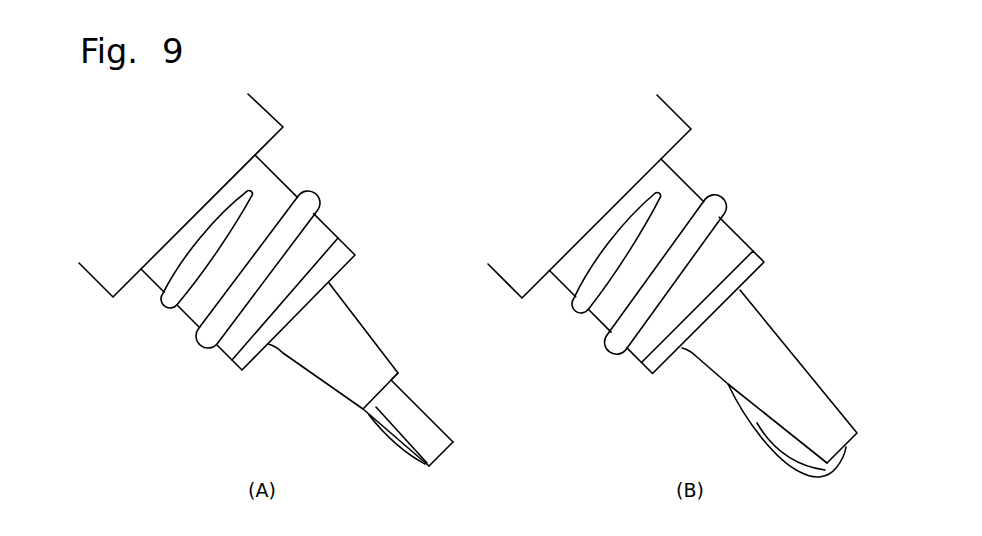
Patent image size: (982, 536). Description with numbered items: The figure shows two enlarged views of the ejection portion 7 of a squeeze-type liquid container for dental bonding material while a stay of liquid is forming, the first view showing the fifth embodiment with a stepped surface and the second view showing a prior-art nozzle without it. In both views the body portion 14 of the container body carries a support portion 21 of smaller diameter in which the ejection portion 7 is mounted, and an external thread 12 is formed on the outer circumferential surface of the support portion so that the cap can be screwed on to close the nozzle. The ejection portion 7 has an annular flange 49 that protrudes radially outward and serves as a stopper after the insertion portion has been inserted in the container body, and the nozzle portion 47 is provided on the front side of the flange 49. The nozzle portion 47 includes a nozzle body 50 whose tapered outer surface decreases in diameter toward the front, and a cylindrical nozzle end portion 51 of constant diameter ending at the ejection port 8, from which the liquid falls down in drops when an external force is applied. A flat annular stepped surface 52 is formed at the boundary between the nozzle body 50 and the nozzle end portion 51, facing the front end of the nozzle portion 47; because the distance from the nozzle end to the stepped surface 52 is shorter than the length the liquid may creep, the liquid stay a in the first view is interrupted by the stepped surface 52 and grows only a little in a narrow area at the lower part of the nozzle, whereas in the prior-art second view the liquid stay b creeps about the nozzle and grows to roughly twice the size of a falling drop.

In FIG. 9A, the ejection portion 7 is at (302, 395).
In FIG. 9A, the ejection port 8 is at (452, 448).
In FIG. 9A, the external thread 12 is at (170, 301).
In FIG. 9A, the body portion 14 is at (253, 120).
In FIG. 9B, the body portion 14 is at (660, 122).
In FIG. 9A, the support portion 21 is at (267, 182).
In FIG. 9A, the nozzle portion 47 is at (360, 322).
In FIG. 9B, the nozzle portion 47 is at (792, 350).
In FIG. 9A, the flange 49 is at (352, 250).
In FIG. 9A, the nozzle body 50 is at (377, 364).
In FIG. 9A, the nozzle end portion 51 is at (431, 420).
In FIG. 9A, the stepped surface 52 is at (398, 381).
In FIG. 9A, the liquid stay a is at (375, 421).
In FIG. 9B, the liquid stay b is at (757, 413).